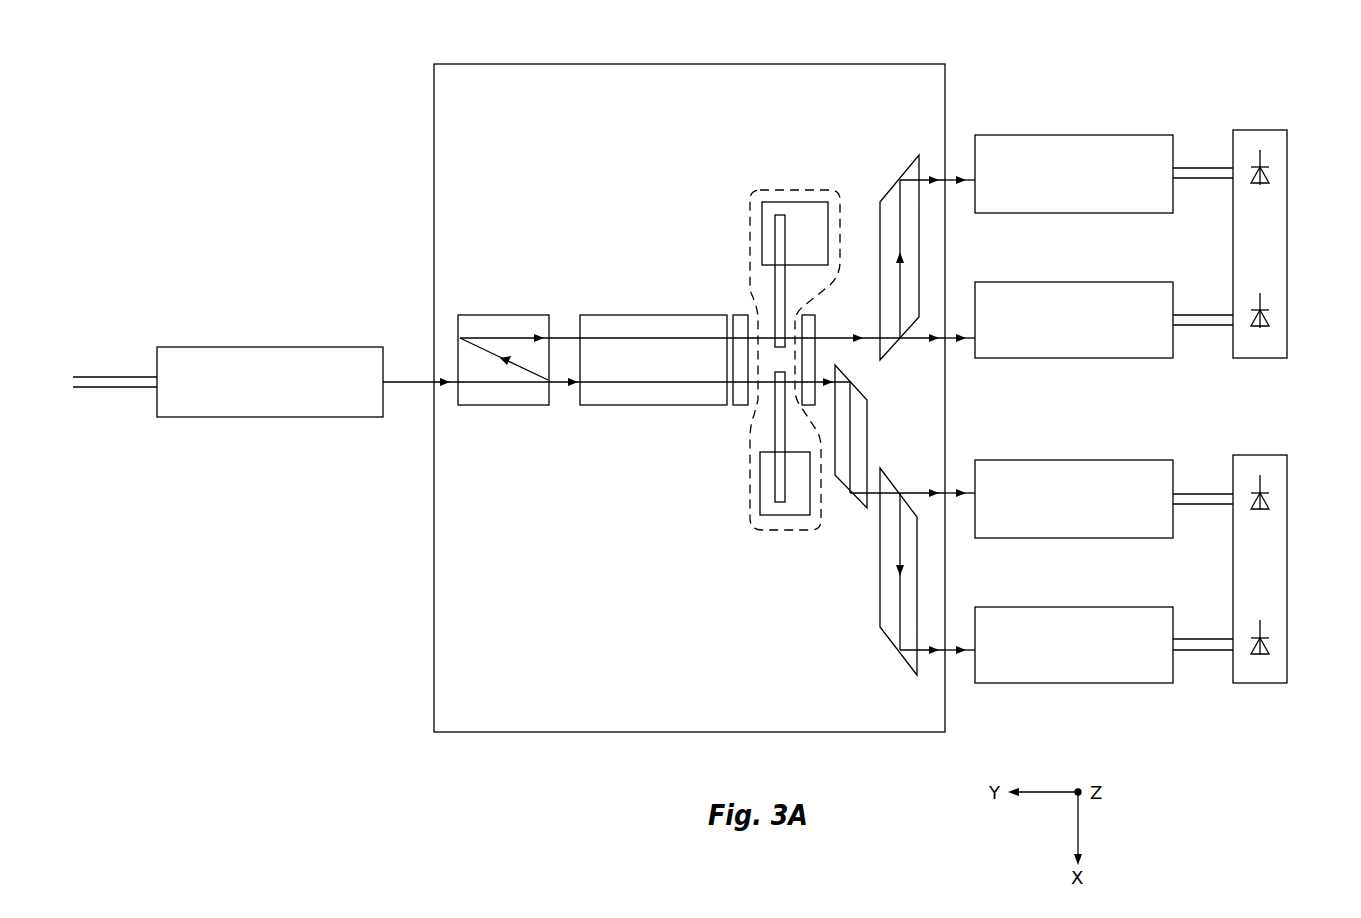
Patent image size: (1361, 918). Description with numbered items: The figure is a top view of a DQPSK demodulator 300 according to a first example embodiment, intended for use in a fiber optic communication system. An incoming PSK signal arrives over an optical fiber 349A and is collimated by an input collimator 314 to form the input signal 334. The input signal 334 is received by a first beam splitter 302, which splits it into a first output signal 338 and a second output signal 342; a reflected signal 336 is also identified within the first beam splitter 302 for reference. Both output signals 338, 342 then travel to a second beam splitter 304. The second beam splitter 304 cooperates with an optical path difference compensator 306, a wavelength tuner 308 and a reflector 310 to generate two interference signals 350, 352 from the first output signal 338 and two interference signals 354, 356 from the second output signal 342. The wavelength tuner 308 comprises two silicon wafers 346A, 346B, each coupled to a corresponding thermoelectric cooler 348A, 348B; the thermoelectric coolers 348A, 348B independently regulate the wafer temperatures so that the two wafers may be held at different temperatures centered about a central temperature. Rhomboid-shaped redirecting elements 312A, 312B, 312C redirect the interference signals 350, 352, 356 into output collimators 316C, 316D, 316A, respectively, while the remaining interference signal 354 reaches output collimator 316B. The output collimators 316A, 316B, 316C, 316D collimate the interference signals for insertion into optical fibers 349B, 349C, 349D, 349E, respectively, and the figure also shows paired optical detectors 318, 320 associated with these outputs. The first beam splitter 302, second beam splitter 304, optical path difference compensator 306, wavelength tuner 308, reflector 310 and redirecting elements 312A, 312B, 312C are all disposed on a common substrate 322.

The demodulator 300 is at (400, 100).
The first beam splitter 302 is at (502, 313).
The second beam splitter 304 is at (657, 313).
The optical path difference compensator 306 is at (742, 317).
The wavelength tuner 308 is at (785, 190).
The reflector 310 is at (812, 316).
The redirecting element 312A is at (910, 158).
The redirecting element 312B is at (865, 430).
The redirecting element 312C is at (880, 592).
The input collimator 314 is at (298, 347).
The output collimator 316A is at (1053, 135).
The output collimator 316B is at (1053, 282).
The output collimator 316C is at (1053, 460).
The output collimator 316D is at (1053, 607).
The paired optical detectors 318 is at (1288, 245).
The paired optical detectors 320 is at (1288, 568).
The substrate 322 is at (568, 111).
The input signal 334 is at (412, 383).
The reflected signal 336 is at (460, 350).
The first output signal 338 is at (558, 383).
The second output signal 342 is at (563, 337).
The silicon wafer 346A is at (775, 422).
The silicon wafer 346B is at (773, 292).
The thermoelectric cooler 348A is at (760, 497).
The thermoelectric cooler 348B is at (760, 213).
The optical fiber 349A is at (127, 375).
The optical fiber 349B is at (1193, 168).
The optical fiber 349C is at (1187, 315).
The optical fiber 349D is at (1187, 493).
The optical fiber 349E is at (1187, 639).
The interference signal 350 is at (948, 492).
The interference signal 352 is at (948, 650).
The interference signal 354 is at (948, 337).
The interference signal 356 is at (948, 178).